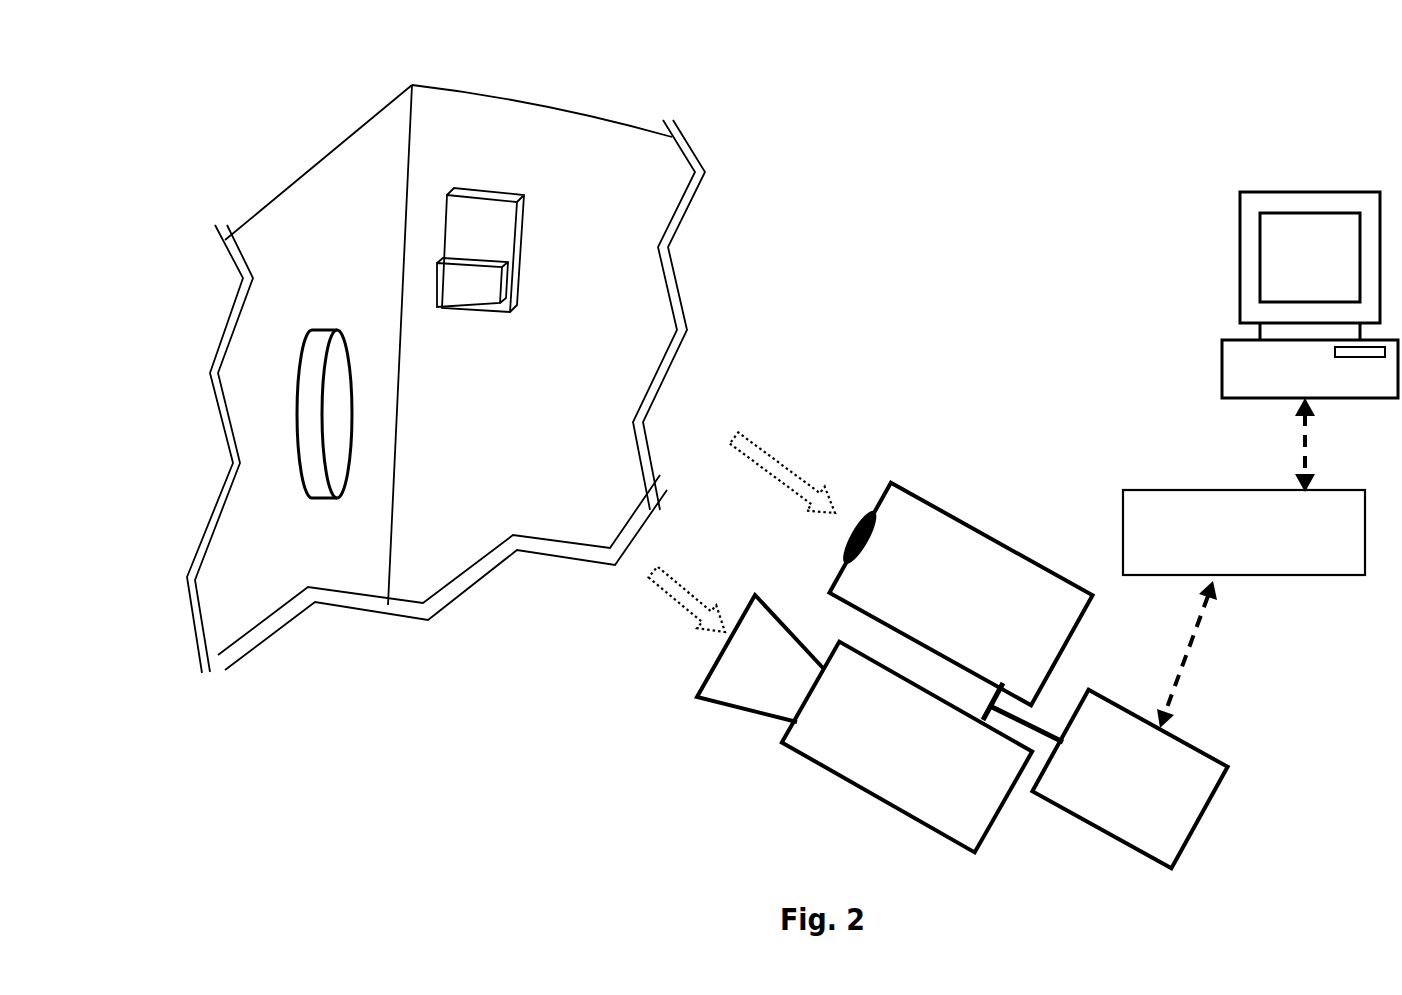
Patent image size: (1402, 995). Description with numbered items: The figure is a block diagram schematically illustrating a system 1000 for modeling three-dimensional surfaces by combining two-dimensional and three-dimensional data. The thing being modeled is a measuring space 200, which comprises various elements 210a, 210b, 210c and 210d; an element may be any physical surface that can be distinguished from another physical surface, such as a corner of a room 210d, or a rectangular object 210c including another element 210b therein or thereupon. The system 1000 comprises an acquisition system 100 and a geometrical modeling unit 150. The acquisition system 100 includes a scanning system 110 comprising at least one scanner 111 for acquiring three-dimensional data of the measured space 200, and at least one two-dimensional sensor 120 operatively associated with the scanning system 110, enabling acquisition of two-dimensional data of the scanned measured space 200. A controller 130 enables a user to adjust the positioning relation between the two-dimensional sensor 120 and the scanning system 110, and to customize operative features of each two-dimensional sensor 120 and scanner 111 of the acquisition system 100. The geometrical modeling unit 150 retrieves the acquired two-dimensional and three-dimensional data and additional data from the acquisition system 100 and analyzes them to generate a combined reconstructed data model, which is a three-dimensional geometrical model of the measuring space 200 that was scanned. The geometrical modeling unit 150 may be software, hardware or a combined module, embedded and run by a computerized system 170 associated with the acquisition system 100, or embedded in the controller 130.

The acquisition system 100 is at (1238, 846).
The scanning system 110 is at (1000, 810).
The scanner 111 is at (868, 775).
The 2D sensor 120 is at (996, 536).
The controller 130 is at (1205, 802).
The geometrical modeling unit 150 is at (1273, 577).
The computerized system 170 is at (1248, 297).
The measuring space 200 is at (232, 318).
The element 210a is at (332, 445).
The element 210b is at (470, 292).
The rectangular object 210c is at (480, 227).
The corner of a room 210d is at (392, 240).
The system 1000 is at (1057, 275).